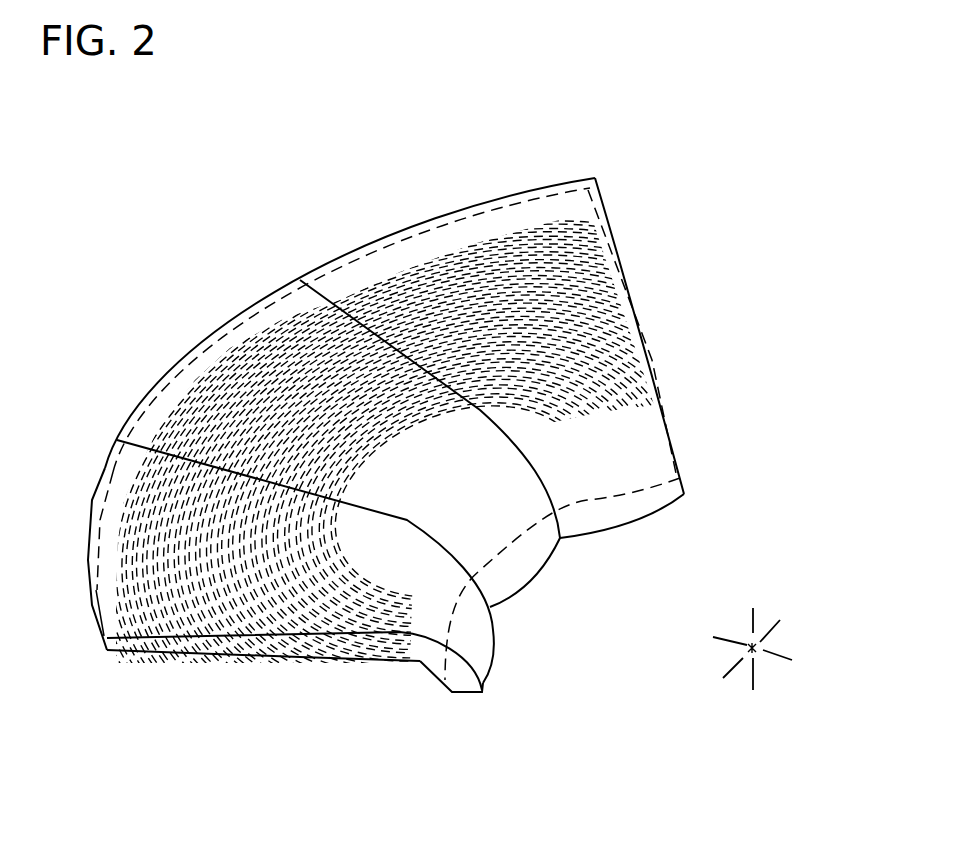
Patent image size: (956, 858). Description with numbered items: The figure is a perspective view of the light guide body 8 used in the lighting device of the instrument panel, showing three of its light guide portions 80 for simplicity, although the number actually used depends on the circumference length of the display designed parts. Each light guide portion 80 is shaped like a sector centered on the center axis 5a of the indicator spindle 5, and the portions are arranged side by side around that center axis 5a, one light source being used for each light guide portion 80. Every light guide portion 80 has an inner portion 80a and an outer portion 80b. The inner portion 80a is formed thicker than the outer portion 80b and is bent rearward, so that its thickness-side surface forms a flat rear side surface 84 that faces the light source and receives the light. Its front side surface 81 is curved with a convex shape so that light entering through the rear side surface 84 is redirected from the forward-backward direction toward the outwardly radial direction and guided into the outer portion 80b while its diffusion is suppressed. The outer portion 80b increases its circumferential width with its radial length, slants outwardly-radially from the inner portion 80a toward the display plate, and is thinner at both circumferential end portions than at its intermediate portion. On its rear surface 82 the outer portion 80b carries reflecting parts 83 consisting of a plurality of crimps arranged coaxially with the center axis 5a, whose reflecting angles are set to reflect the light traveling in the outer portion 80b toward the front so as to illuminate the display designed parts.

The light guide body 8 is at (461, 488).
The light guide portion 80 is at (437, 212).
The inner portion 80a is at (630, 517).
The outer portion 80b is at (632, 236).
The front side surface 81 is at (643, 452).
The rear surface 82 is at (230, 657).
The reflecting parts 83 is at (272, 670).
The rear side surface 84 is at (468, 693).
The indicator spindle 5 is at (784, 645).
The center axis 5a is at (755, 670).